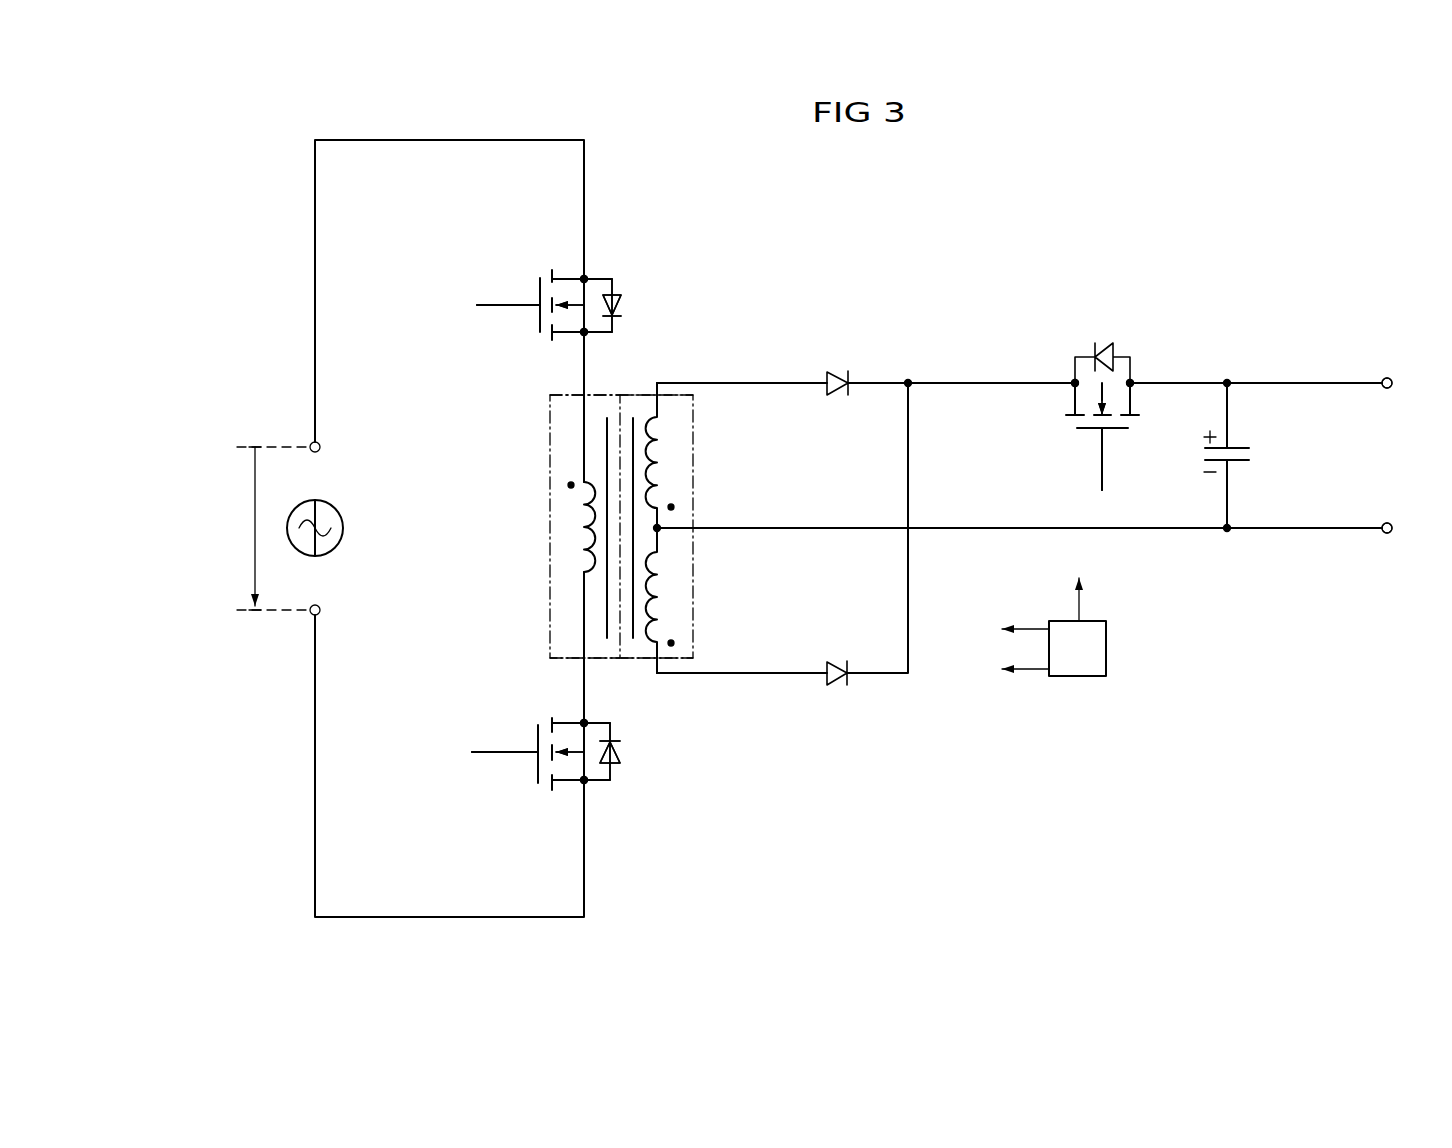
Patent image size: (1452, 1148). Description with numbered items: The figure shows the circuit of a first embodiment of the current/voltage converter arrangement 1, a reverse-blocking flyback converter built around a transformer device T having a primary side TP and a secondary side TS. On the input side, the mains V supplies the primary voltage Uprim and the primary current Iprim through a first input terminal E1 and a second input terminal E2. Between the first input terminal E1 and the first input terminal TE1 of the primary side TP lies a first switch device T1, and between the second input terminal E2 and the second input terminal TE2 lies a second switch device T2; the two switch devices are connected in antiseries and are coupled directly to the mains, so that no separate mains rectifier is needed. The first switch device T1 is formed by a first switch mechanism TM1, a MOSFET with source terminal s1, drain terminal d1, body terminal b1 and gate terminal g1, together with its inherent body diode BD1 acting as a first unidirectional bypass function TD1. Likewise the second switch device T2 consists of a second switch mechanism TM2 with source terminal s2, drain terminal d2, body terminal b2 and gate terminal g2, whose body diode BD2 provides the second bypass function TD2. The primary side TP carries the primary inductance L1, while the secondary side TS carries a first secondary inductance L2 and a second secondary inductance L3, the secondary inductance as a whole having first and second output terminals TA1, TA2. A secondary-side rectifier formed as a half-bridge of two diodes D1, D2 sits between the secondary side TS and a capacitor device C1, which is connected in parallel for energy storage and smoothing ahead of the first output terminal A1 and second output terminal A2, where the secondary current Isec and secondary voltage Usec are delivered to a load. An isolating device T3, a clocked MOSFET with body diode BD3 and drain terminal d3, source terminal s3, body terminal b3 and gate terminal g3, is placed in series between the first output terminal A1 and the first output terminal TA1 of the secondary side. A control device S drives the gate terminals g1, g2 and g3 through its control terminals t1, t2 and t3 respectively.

The current/voltage converter arrangement 1 is at (953, 246).
The first input terminal E1 is at (315, 230).
The second input terminal E2 is at (315, 736).
The primary current Iprim is at (478, 153).
The primary voltage Uprim is at (256, 487).
The mains V is at (322, 502).
The first switch device T1 is at (569, 296).
The first switch mechanism TM1 is at (530, 290).
The first bypass function TD1 is at (648, 293).
The body diode BD1 is at (612, 305).
The first gate terminal g1 is at (490, 305).
The first source terminal s1 is at (588, 277).
The first drain terminal d1 is at (578, 336).
The first body terminal b1 is at (578, 302).
The second switch device T2 is at (560, 768).
The second switch mechanism TM2 is at (528, 767).
The second bypass function TD2 is at (632, 772).
The body diode BD2 is at (610, 751).
The second gate terminal g2 is at (492, 752).
The second source terminal s2 is at (568, 783).
The second drain terminal d2 is at (580, 720).
The second body terminal b2 is at (575, 755).
The transformer device T is at (605, 529).
The primary side TP is at (552, 428).
The secondary side TS is at (697, 432).
The first input terminal of primary side TE1 is at (580, 390).
The second input terminal of primary side TE2 is at (580, 665).
The first output terminal of secondary side TA1 is at (696, 383).
The second output terminal of secondary side TA2 is at (692, 673).
The primary inductance L1 is at (582, 540).
The first secondary inductance L2 is at (660, 450).
The second secondary inductance L3 is at (660, 585).
The diode D1 is at (848, 365).
The diode D2 is at (848, 693).
The isolating device T3 is at (1095, 381).
The body diode BD3 is at (1087, 331).
The gate terminal g3 is at (1102, 466).
The source terminal s3 is at (1133, 400).
The drain terminal d3 is at (1072, 400).
The body terminal b3 is at (1115, 383).
The capacitor device C1 is at (1248, 456).
The first output terminal A1 is at (1326, 383).
The second output terminal A2 is at (1326, 528).
The secondary current Isec is at (1364, 397).
The secondary voltage Usec is at (1387, 400).
The control device S is at (1077, 648).
The control terminal t1 is at (1014, 632).
The control terminal t2 is at (1014, 671).
The control terminal t3 is at (1079, 582).